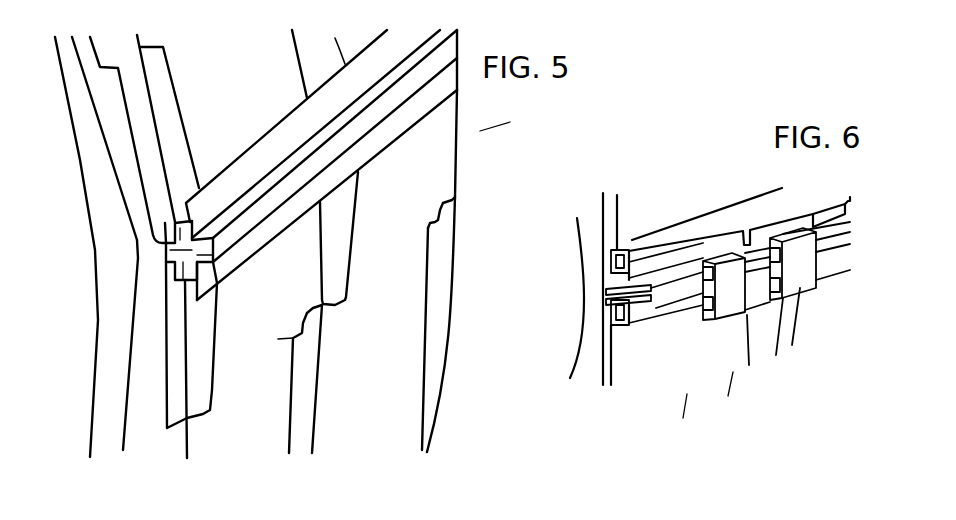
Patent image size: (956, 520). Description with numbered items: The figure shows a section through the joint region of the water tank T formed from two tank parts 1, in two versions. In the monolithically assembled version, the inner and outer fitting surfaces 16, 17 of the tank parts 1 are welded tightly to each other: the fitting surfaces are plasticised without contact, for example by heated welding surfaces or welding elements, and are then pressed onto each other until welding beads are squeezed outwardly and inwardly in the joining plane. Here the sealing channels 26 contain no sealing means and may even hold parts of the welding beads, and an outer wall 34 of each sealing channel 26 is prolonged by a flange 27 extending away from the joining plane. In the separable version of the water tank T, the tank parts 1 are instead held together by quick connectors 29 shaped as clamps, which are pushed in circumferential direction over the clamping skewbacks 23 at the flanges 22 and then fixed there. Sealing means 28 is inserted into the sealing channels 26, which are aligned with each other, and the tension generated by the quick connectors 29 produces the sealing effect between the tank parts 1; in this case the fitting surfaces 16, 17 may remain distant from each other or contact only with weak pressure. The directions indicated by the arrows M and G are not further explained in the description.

In FIG. 5, the tank parts 1 is at (164, 122).
In FIG. 6, the tank parts 1 is at (623, 238).
In FIG. 5, the inner fitting surface 16 is at (165, 252).
In FIG. 6, the inner fitting surface 16 is at (603, 298).
In FIG. 5, the outer fitting surface 17 is at (230, 250).
In FIG. 6, the outer fitting surface 17 is at (613, 342).
In FIG. 6, the flanges 22 is at (685, 307).
In FIG. 6, the clamping skewbacks 23 is at (702, 244).
In FIG. 5, the sealing channels 26 is at (197, 283).
In FIG. 6, the sealing channels 26 is at (632, 240).
In FIG. 5, the flange 27 is at (197, 205).
In FIG. 6, the sealing means 28 is at (603, 277).
In FIG. 6, the quick connectors 29 is at (778, 335).
In FIG. 5, the outer wall 34 is at (192, 222).
In FIG. 5, the water tank T is at (475, 132).
In FIG. 6, the water tank T is at (688, 386).
In FIG. 5, the module direction M is at (477, 184).
In FIG. 6, the direction G is at (734, 365).